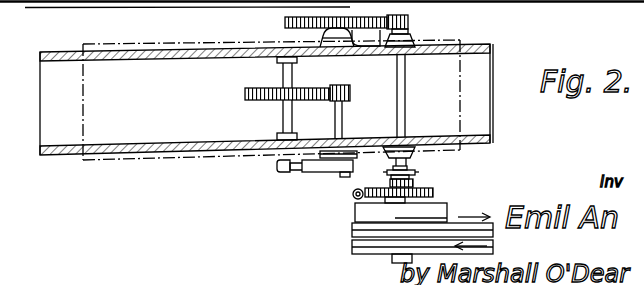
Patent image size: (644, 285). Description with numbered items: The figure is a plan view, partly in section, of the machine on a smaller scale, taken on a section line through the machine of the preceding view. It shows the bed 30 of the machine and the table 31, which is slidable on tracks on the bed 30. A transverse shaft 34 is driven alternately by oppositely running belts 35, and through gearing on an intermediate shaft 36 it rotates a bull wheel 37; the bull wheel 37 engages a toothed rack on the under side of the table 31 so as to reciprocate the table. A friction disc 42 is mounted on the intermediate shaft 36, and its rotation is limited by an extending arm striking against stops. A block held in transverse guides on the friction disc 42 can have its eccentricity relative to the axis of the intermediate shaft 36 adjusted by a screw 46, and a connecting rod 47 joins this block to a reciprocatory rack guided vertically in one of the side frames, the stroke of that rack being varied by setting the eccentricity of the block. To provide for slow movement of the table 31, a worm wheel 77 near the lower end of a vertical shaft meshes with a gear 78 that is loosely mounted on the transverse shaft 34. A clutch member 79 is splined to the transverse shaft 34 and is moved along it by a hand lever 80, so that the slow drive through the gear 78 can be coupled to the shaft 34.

The bed 30 is at (175, 144).
The table 31 is at (156, 44).
The transverse shaft 34 is at (406, 106).
The belts 35 is at (350, 229).
The intermediate shaft 36 is at (343, 117).
The bull wheel 37 is at (257, 88).
The friction disc 42 is at (353, 155).
The screw 46 is at (284, 173).
The connecting rod 47 is at (343, 173).
The worm wheel 77 is at (352, 199).
The gear 78 is at (418, 190).
The clutch member 79 is at (408, 163).
The hand lever 80 is at (415, 170).